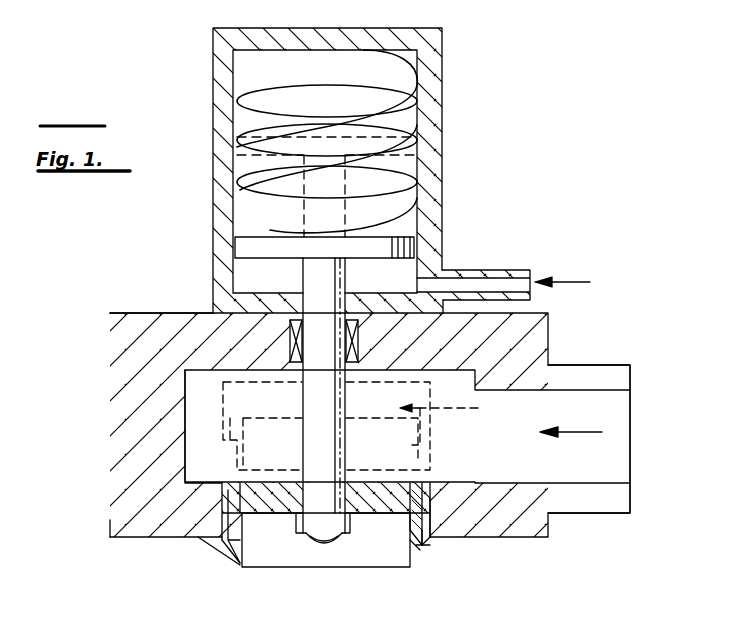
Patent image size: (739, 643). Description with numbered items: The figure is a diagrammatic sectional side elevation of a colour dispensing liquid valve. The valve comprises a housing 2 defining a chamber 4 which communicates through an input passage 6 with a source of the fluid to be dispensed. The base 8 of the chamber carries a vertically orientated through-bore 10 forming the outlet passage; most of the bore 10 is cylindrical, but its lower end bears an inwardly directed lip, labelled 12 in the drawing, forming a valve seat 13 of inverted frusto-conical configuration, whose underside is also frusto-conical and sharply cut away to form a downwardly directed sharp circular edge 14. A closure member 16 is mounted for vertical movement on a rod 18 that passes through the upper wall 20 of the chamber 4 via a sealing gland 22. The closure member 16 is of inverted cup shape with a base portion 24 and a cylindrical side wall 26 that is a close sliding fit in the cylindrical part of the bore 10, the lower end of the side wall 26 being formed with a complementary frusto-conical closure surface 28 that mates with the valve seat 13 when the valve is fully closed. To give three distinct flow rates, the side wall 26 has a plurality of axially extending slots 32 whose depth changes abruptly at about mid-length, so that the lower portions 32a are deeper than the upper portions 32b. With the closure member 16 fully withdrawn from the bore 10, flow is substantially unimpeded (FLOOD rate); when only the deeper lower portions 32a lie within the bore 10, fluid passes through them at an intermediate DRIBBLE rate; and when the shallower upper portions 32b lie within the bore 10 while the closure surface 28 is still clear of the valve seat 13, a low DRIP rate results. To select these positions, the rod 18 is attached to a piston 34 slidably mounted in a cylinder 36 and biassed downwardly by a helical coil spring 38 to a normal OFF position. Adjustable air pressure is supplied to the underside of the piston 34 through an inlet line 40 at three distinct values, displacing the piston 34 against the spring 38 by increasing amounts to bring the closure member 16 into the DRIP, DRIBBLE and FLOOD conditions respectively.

The housing 2 is at (140, 397).
The chamber 4 is at (212, 436).
The input passage 6 is at (628, 378).
The base 8 is at (168, 512).
The through-bore 10 is at (410, 490).
The seal element 12 is at (430, 548).
The valve seat 13 is at (425, 560).
The sharp circular edge 14 is at (418, 558).
The closure member 16 is at (372, 575).
The rod 18 is at (312, 393).
The upper wall 20 is at (172, 332).
The sealing gland 22 is at (367, 343).
The base portion 24 is at (292, 532).
The cylindrical side wall 26 is at (248, 530).
The frusto-conical closure surface 28 is at (242, 565).
The axially extending slots 32 is at (430, 523).
The lower portions of the slots 32a is at (430, 542).
The upper portions of the slots 32b is at (432, 498).
The piston 34 is at (412, 250).
The cylinder 36 is at (434, 165).
The helical coil spring 38 is at (420, 90).
The inlet line 40 is at (502, 270).